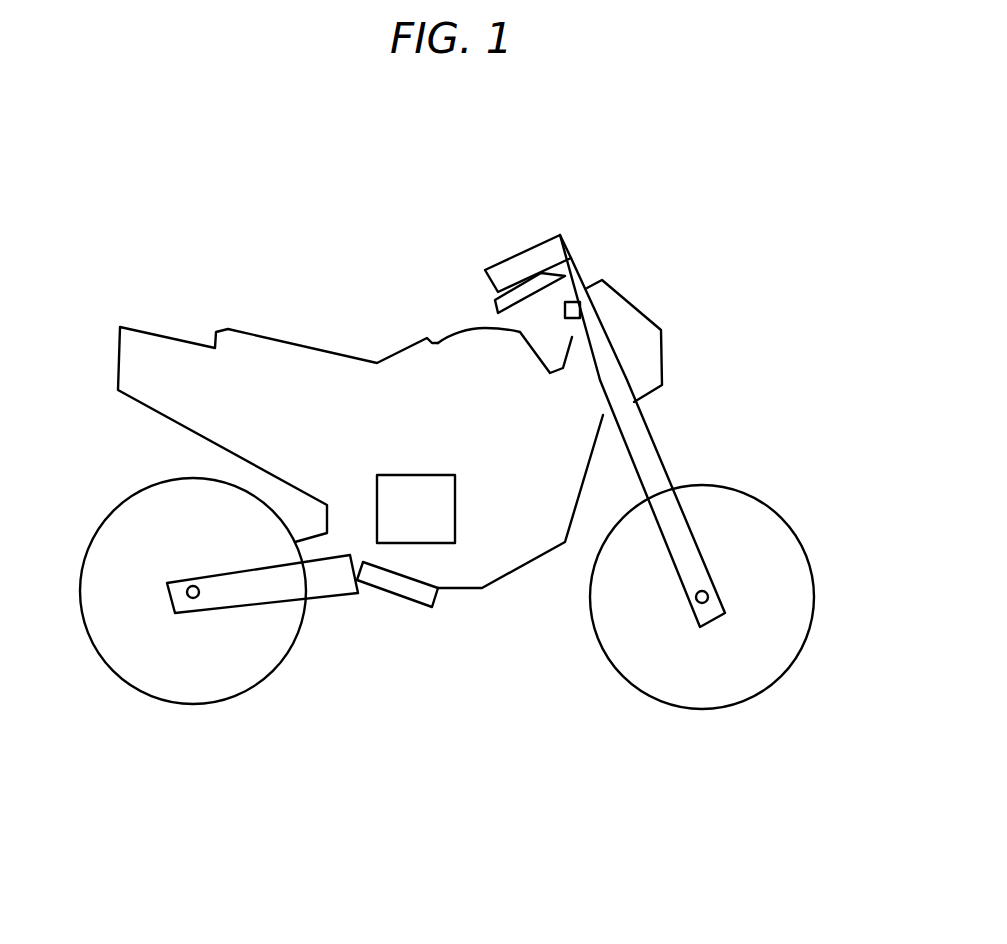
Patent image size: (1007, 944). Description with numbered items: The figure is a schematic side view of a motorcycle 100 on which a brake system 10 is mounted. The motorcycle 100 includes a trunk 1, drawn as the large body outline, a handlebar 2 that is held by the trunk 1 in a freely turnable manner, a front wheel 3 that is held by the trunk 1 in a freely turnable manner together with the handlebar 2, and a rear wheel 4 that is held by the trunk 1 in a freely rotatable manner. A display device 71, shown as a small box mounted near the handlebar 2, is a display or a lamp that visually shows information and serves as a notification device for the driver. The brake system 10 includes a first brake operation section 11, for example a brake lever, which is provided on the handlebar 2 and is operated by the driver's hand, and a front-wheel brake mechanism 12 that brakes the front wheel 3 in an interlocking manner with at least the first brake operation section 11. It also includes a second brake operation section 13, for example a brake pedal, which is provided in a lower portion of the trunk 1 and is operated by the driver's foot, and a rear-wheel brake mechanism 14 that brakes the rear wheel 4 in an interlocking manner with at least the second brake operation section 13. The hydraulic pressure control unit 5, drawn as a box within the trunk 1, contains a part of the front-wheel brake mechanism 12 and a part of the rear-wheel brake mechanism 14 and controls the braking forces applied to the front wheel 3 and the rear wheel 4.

The motorcycle 100 is at (763, 108).
The trunk 1 is at (292, 365).
The handlebar 2 is at (529, 258).
The front wheel 3 is at (703, 726).
The rear wheel 4 is at (193, 722).
The hydraulic pressure control unit 5 is at (400, 472).
The brake system 10 is at (694, 406).
The first brake operation section 11 is at (494, 302).
The front-wheel brake mechanism 12 is at (720, 567).
The second brake operation section 13 is at (413, 592).
The rear-wheel brake mechanism 14 is at (176, 573).
The display device 71 is at (582, 308).